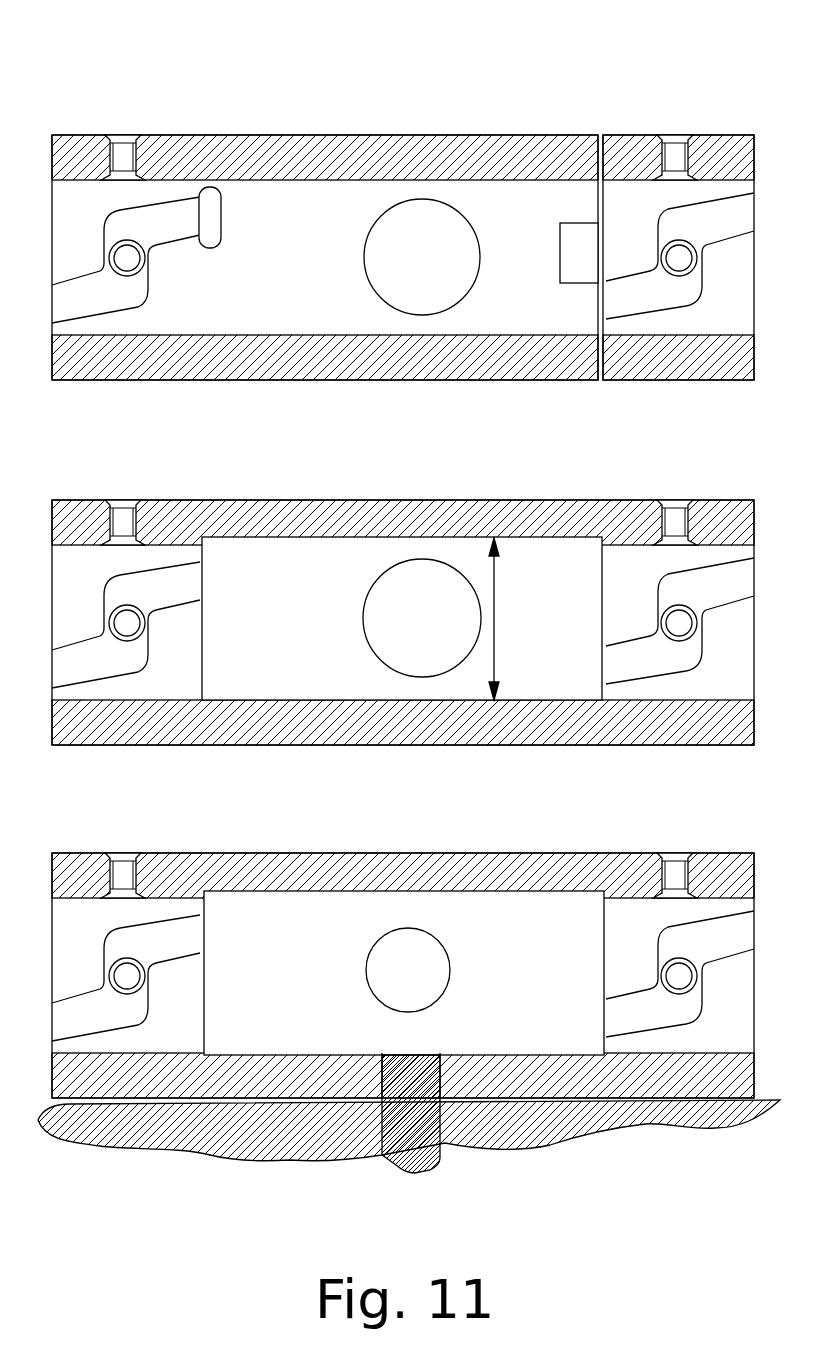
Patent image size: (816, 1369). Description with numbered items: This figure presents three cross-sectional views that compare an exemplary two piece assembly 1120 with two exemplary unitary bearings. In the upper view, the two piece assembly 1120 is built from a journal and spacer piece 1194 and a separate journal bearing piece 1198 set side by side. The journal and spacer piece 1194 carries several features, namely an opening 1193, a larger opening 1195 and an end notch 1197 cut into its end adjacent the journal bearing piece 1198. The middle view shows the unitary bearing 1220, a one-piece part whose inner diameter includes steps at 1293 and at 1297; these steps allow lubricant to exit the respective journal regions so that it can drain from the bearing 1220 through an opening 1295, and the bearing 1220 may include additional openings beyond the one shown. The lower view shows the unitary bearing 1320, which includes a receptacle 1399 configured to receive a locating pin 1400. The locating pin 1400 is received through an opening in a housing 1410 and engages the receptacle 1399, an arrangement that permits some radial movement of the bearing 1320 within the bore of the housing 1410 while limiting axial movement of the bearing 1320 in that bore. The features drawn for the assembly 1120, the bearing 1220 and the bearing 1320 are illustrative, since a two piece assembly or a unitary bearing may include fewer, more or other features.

The two piece assembly 1120 is at (403, 203).
The journal and spacer piece 1194 is at (246, 135).
The journal bearing piece 1198 is at (626, 134).
The opening 1193 is at (222, 217).
The opening 1195 is at (364, 256).
The end notch 1197 is at (559, 250).
The unitary bearing 1220 is at (403, 588).
The step in inner diameter 1293 is at (204, 579).
The opening 1295 is at (364, 617).
The step in inner diameter 1297 is at (601, 652).
The unitary bearing 1320 is at (409, 981).
The receptacle 1399 is at (382, 1052).
The locating pin 1400 is at (440, 1052).
The housing 1410 is at (547, 1150).